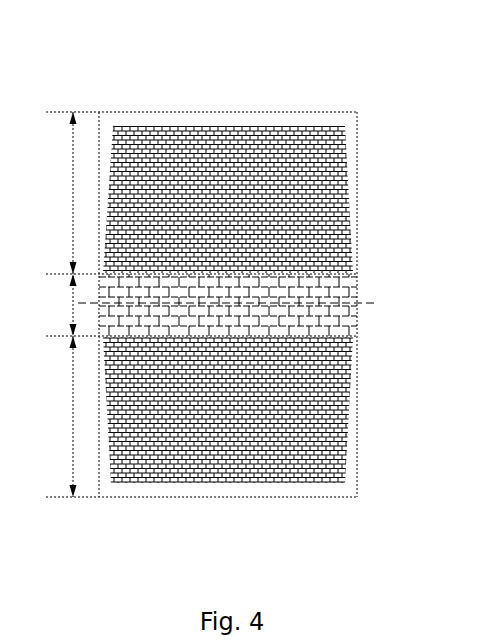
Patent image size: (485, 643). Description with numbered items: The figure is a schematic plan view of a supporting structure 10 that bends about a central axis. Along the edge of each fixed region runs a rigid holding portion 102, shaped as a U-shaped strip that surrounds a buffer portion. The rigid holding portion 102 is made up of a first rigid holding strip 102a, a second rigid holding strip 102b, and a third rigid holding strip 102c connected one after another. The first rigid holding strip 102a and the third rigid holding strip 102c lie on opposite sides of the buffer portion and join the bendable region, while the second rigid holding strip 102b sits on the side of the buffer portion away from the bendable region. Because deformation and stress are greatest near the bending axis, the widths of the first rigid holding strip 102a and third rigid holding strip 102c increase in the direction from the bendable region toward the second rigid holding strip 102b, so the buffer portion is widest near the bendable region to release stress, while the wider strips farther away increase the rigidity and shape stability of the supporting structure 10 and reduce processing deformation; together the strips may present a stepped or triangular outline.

The supporting structure 10 is at (56, 27).
The rigid holding portion 102 is at (115, 72).
The first rigid holding strip 102a is at (105, 125).
The second rigid holding strip 102b is at (232, 118).
The third rigid holding strip 102c is at (347, 125).